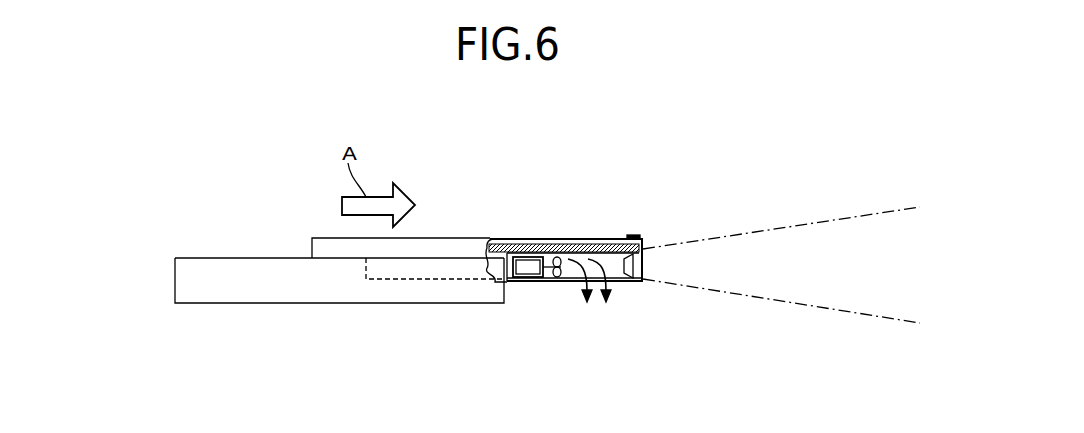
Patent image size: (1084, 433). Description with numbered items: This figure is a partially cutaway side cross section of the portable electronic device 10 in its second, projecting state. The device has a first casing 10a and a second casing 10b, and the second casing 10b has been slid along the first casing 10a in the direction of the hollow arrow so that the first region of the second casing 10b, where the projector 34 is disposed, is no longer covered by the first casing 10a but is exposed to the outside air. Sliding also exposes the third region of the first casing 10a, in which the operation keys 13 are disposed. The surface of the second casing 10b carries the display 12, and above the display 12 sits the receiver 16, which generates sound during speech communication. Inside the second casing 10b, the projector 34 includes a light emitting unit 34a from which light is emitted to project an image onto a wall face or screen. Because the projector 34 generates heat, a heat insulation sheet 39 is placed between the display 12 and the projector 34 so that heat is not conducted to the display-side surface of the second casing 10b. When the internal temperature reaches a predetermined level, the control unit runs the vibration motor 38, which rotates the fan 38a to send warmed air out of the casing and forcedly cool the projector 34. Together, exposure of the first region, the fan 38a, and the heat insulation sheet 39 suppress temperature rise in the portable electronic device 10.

The portable electronic device 10 is at (430, 157).
The first casing 10a is at (175, 258).
The second casing 10b is at (311, 239).
The display 12 is at (508, 240).
The operation keys 13 is at (205, 258).
The receiver 16 is at (633, 237).
The projector 34 is at (614, 262).
The light emitting unit 34a is at (650, 268).
The vibration motor 38 is at (525, 270).
The fan 38a is at (566, 280).
The heat insulation sheet 39 is at (578, 245).